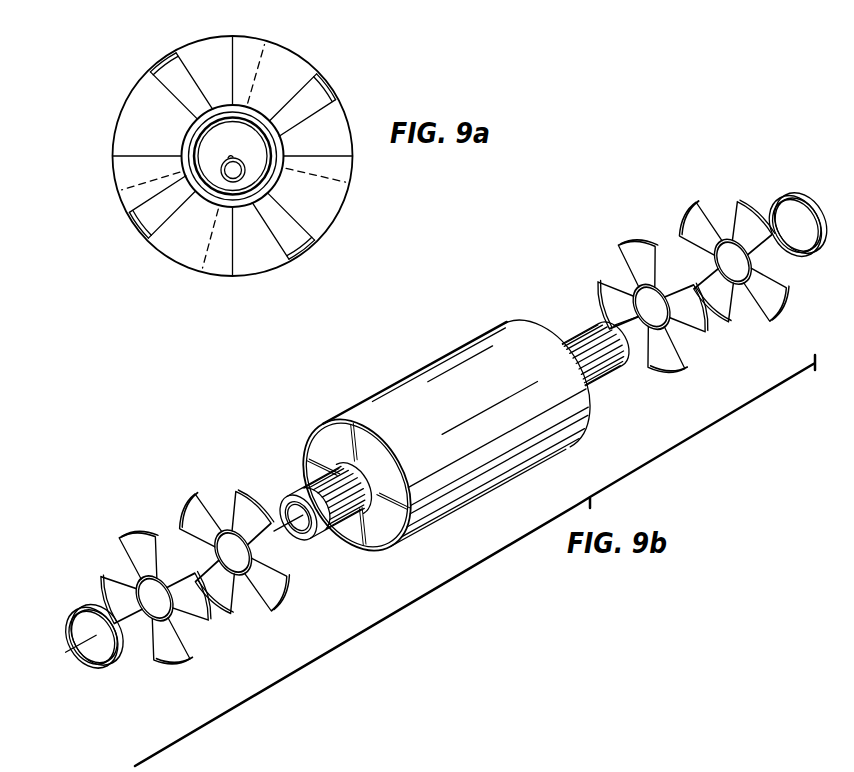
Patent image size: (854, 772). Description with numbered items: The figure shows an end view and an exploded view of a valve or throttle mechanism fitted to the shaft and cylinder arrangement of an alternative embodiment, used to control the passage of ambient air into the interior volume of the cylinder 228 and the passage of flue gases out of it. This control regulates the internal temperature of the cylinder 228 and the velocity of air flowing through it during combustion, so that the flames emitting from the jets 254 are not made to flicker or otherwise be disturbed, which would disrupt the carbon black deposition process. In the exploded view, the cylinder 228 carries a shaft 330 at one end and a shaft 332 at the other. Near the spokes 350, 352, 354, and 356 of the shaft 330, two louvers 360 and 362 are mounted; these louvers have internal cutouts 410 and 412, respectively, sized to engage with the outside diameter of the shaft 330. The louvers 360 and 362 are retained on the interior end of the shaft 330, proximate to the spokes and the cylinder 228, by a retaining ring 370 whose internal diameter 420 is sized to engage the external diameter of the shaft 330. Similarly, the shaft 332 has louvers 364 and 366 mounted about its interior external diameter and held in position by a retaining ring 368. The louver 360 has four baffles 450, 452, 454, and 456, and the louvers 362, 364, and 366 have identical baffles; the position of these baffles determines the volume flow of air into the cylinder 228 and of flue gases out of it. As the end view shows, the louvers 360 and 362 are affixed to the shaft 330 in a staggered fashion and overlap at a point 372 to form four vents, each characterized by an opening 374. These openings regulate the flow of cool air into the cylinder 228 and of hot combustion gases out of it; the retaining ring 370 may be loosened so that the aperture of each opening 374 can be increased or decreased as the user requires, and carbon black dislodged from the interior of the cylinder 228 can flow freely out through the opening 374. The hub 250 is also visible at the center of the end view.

In FIG. 9a, the cylinder 228 is at (317, 96).
In FIG. 9b, the cylinder 228 is at (443, 367).
In FIG. 9a, the hub 250 is at (214, 166).
In FIG. 9a, the jets 254 is at (248, 138).
In FIG. 9a, the shaft 330 is at (318, 142).
In FIG. 9b, the shaft 330 is at (325, 527).
In FIG. 9b, the shaft 332 is at (606, 360).
In FIG. 9b, the spoke 350 is at (318, 470).
In FIG. 9b, the spoke 352 is at (378, 453).
In FIG. 9b, the spoke 354 is at (393, 533).
In FIG. 9b, the spoke 356 is at (358, 540).
In FIG. 9a, the louver 360 is at (204, 50).
In FIG. 9b, the louver 360 is at (160, 593).
In FIG. 9a, the louver 362 is at (285, 60).
In FIG. 9b, the louver 362 is at (242, 547).
In FIG. 9b, the louver 364 is at (632, 248).
In FIG. 9b, the louver 366 is at (690, 216).
In FIG. 9b, the retaining ring 368 is at (762, 203).
In FIG. 9b, the retaining ring 370 is at (99, 639).
In FIG. 9a, the overlap point 372 is at (352, 150).
In FIG. 9a, the opening 374 is at (165, 70).
In FIG. 9b, the internal cutout 410 is at (170, 622).
In FIG. 9b, the internal cutout 412 is at (250, 558).
In FIG. 9b, the internal diameter 420 is at (92, 660).
In FIG. 9b, the baffle 450 is at (131, 541).
In FIG. 9b, the baffle 452 is at (176, 581).
In FIG. 9b, the baffle 454 is at (167, 654).
In FIG. 9b, the baffle 456 is at (108, 570).